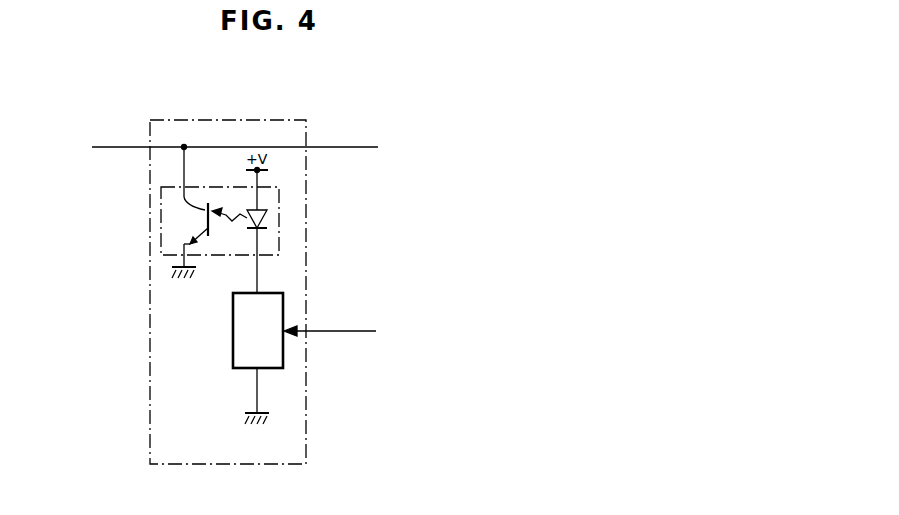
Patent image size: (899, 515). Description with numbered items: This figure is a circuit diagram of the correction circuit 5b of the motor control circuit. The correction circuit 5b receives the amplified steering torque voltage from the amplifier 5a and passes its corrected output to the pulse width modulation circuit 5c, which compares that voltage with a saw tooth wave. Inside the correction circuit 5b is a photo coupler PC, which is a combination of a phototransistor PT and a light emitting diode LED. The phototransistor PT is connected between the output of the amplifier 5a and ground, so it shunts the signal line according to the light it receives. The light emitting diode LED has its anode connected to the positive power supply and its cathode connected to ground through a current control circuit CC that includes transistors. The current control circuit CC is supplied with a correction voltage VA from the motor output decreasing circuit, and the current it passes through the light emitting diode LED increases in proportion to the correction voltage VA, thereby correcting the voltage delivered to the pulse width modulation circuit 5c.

The correction circuit 5b is at (268, 118).
The amplifier 5a is at (204, 135).
The pulse width modulation circuit 5c is at (344, 135).
The photo coupler PC is at (272, 186).
The phototransistor PT is at (222, 187).
The light emitting diode LED is at (264, 221).
The current control circuit CC is at (233, 336).
The correction voltage VA is at (330, 325).